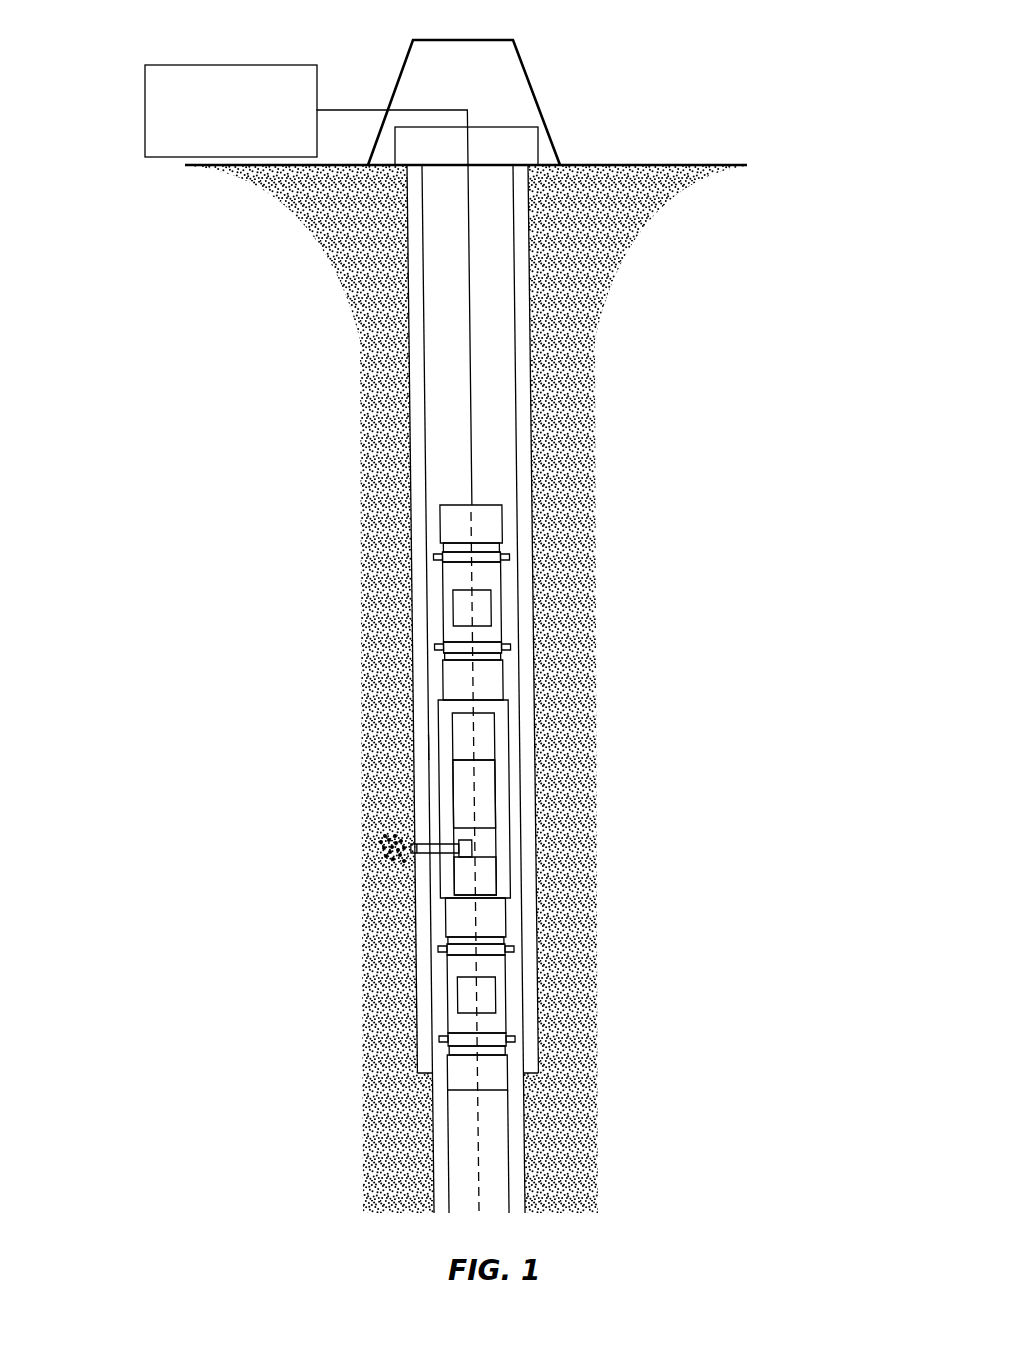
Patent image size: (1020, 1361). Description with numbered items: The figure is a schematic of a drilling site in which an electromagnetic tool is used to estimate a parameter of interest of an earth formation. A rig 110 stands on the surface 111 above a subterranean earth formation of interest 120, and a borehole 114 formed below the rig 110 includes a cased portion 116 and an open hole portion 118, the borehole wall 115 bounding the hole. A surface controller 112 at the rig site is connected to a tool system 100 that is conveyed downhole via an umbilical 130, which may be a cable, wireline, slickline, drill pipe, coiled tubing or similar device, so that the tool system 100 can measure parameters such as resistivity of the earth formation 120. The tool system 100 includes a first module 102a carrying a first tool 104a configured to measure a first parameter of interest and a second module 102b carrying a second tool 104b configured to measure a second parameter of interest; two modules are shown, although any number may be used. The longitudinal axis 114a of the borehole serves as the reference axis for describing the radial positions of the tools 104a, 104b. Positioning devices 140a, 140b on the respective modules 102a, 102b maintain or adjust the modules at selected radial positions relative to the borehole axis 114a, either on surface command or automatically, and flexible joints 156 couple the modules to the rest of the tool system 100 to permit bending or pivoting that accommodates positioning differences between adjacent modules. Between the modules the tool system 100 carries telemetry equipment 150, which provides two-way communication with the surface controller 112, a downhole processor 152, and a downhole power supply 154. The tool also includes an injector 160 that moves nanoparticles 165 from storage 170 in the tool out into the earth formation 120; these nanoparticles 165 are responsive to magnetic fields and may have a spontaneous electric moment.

The tool system 100 is at (703, 673).
The first module 102a is at (470, 602).
The second module 102b is at (470, 994).
The first tool 104a is at (457, 607).
The second tool 104b is at (457, 993).
The rig 110 is at (544, 68).
The surface 111 is at (698, 163).
The surface controller 112 is at (145, 97).
The borehole 114 is at (440, 712).
The longitudinal axis of the borehole 114a is at (462, 1148).
The borehole wall 115 is at (428, 751).
The cased portion 116 is at (529, 288).
The open hole portion 118 is at (524, 1126).
The earth formation 120 is at (177, 700).
The umbilical 130 is at (469, 330).
The positioning device 140a is at (445, 557).
The positioning device 140b is at (445, 947).
The telemetry equipment 150 is at (484, 732).
The downhole processor 152 is at (484, 790).
The downhole power supply 154 is at (484, 872).
The flexible joint 156 is at (498, 675).
The injector 160 is at (420, 845).
The nanoparticles 165 is at (383, 846).
The storage 170 is at (471, 848).